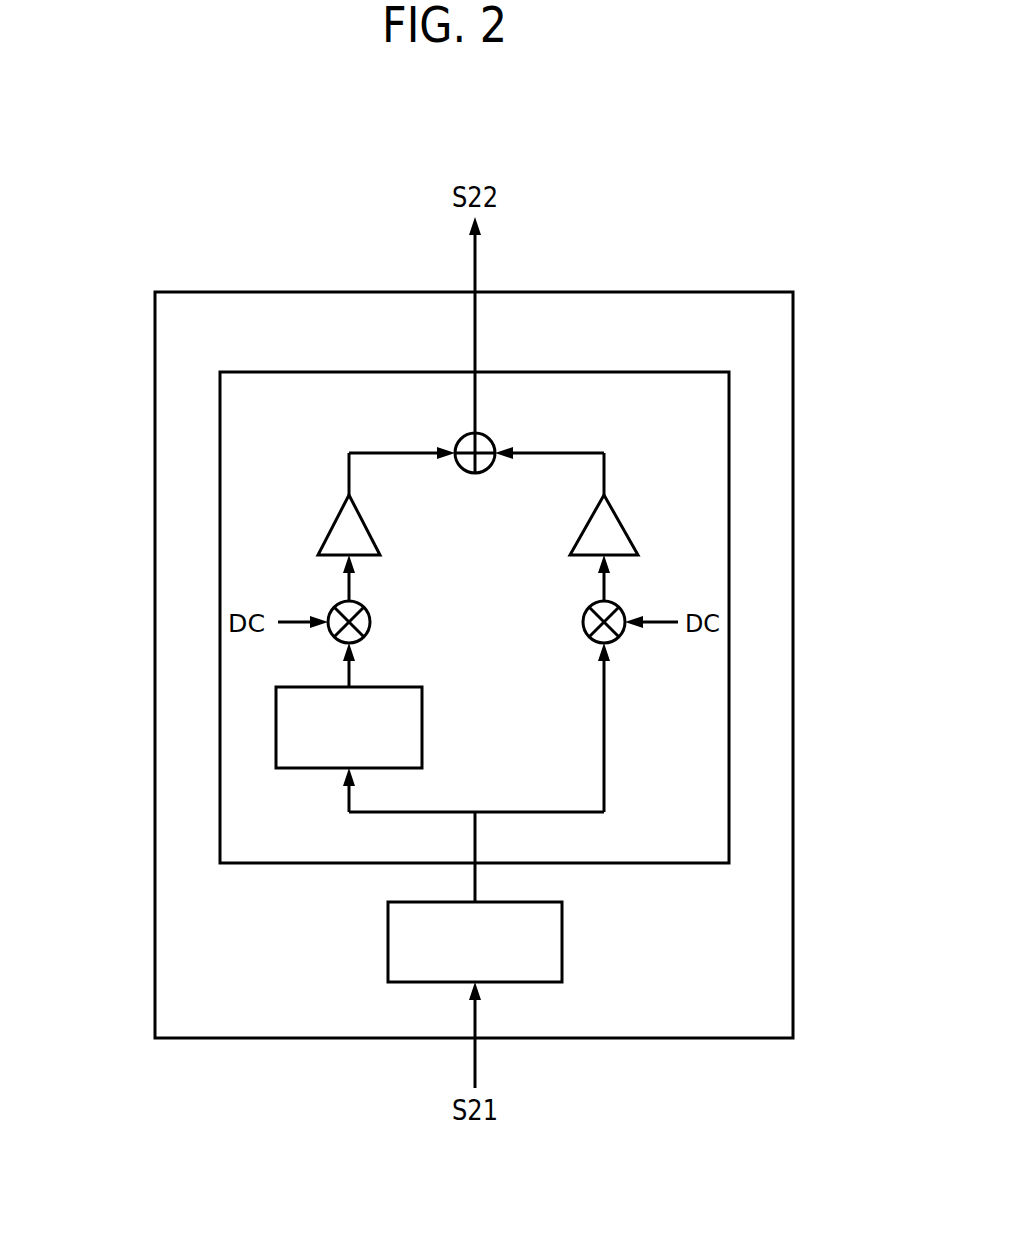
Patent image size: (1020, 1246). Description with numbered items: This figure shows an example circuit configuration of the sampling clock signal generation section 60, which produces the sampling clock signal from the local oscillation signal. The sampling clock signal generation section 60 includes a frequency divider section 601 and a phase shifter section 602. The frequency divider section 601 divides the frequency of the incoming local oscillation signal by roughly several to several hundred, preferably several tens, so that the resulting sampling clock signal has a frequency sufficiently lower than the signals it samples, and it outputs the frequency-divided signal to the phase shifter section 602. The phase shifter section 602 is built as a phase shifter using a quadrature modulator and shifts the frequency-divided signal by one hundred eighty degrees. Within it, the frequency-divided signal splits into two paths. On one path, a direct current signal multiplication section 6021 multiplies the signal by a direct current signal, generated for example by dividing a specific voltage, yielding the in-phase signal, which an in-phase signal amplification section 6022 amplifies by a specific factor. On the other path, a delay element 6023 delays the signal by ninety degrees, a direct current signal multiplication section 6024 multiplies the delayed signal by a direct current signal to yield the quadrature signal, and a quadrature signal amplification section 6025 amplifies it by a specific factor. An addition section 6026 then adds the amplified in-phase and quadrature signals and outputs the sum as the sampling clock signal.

The sampling clock signal generation section 60 is at (740, 291).
The frequency divider section 601 is at (412, 982).
The phase shifter section 602 is at (729, 420).
The direct current signal multiplication section 6021 is at (619, 607).
The in-phase signal amplification section 6022 is at (626, 533).
The delay element 6023 is at (276, 727).
The direct current signal multiplication section 6024 is at (334, 607).
The quadrature signal amplification section 6025 is at (330, 532).
The addition section 6026 is at (490, 437).